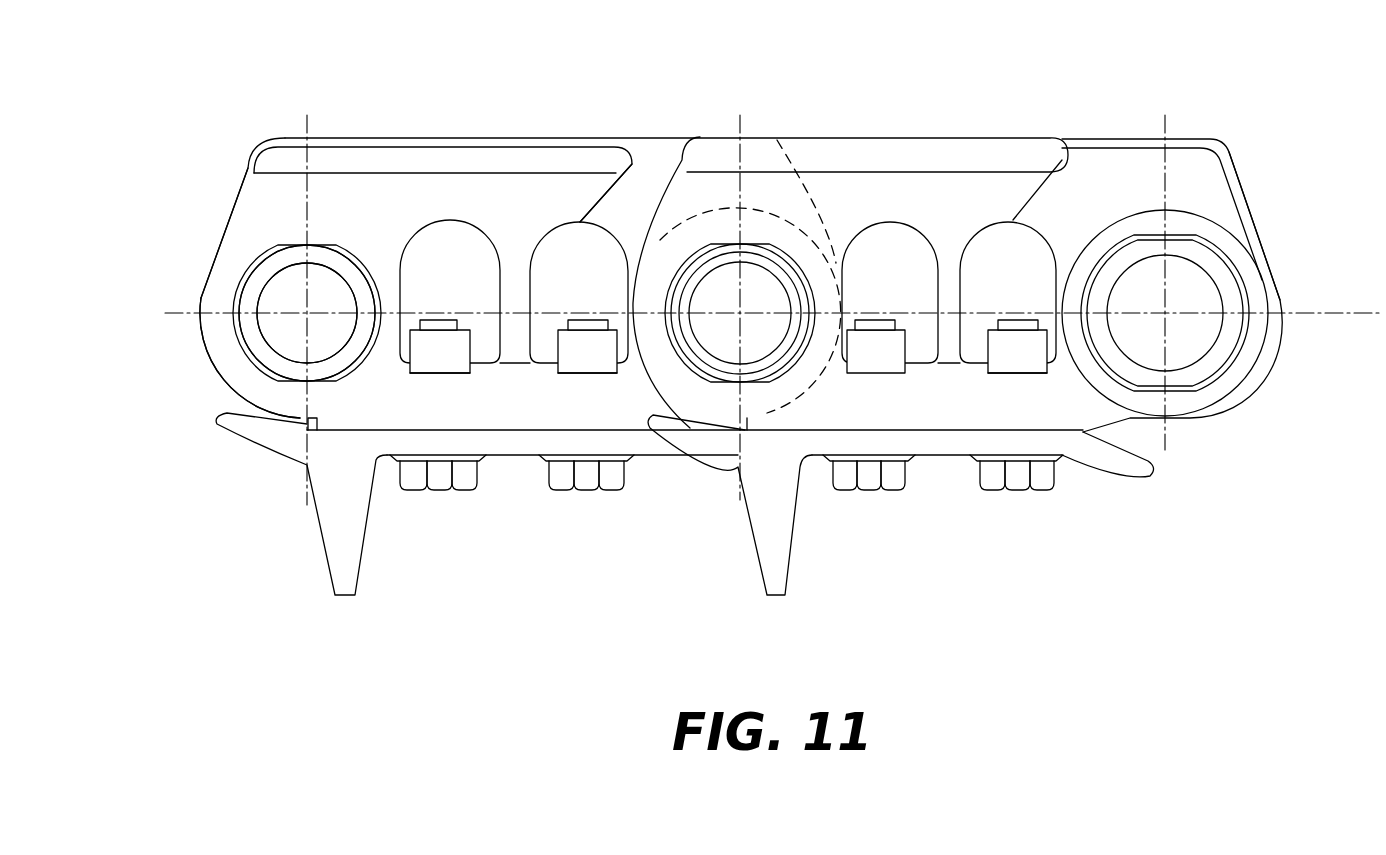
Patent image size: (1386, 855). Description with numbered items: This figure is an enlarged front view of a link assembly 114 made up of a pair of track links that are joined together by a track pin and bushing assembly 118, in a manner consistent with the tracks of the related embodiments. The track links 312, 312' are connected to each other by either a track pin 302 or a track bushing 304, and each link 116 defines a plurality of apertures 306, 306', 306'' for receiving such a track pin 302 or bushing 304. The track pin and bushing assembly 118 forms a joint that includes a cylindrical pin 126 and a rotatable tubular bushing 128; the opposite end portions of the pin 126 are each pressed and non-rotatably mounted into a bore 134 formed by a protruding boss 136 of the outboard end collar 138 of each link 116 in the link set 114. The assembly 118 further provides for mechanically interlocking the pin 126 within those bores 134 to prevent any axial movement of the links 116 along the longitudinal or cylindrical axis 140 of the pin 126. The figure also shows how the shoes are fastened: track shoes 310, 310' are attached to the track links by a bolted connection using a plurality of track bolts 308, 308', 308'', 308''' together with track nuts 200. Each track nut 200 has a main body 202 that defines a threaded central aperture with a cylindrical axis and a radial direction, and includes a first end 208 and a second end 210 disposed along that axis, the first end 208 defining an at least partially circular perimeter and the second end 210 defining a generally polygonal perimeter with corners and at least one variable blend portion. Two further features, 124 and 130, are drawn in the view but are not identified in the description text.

The link assembly 114 is at (1238, 162).
The link 116 is at (233, 210).
The track pin and bushing assembly 118 is at (714, 332).
The leg 124 is at (340, 552).
The cylindrical pin 126 is at (717, 273).
The rotatable tubular bushing 128 is at (845, 297).
The boss outline 130 is at (803, 137).
The bore 134 is at (260, 306).
The protruding boss 136 is at (337, 360).
The outboard end collar 138 is at (215, 355).
The longitudinal or cylindrical axis 140 is at (742, 314).
The track nut 200 is at (590, 360).
The main body 202 is at (459, 340).
The first end 208 is at (427, 325).
The second end 210 is at (446, 374).
The track pin 302 is at (348, 260).
The track bushing 304 is at (752, 238).
The aperture 306 is at (348, 278).
The aperture 306' is at (705, 283).
The aperture 306'' is at (1165, 243).
The track bolt 308 is at (438, 516).
The track bolt 308' is at (586, 516).
The track bolt 308'' is at (869, 516).
The track bolt 308''' is at (1022, 516).
The track shoe 310 is at (947, 496).
The track shoe 310' is at (523, 496).
The track link 312 is at (852, 248).
The track link 312' is at (443, 139).